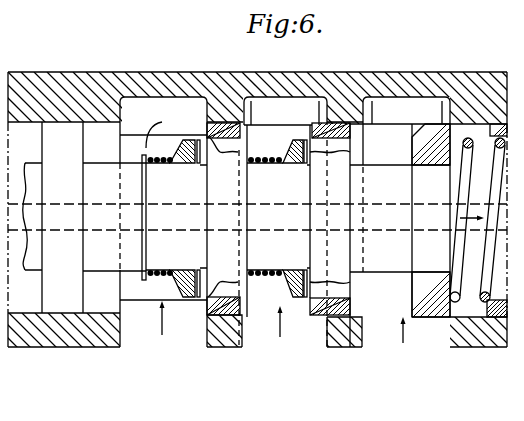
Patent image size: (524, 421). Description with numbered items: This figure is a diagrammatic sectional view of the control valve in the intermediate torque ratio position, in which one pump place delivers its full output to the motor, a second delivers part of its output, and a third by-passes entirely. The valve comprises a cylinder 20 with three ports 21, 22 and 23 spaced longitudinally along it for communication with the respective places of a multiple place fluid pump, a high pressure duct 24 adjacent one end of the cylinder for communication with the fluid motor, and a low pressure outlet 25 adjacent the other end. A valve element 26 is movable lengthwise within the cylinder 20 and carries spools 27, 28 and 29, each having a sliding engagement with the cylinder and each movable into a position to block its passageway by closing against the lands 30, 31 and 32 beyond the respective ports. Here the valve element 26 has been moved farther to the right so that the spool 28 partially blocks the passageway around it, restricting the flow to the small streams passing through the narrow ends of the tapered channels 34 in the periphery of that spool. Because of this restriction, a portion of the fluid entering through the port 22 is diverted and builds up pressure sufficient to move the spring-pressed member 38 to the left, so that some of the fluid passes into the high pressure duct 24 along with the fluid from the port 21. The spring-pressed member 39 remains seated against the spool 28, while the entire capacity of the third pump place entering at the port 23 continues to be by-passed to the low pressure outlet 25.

The cylinder 20 is at (100, 132).
The port 21 is at (207, 322).
The port 22 is at (330, 323).
The port 23 is at (450, 325).
The high pressure duct 24 is at (145, 301).
The low pressure outlet 25 is at (497, 300).
The valve element 26 is at (27, 164).
The spool 27 is at (199, 141).
The spool 28 is at (313, 123).
The spool 29 is at (418, 124).
The land 30 is at (228, 123).
The land 31 is at (374, 132).
The land 32 is at (464, 133).
The tapered channels 34 is at (356, 136).
The spring-pressed member 38 is at (190, 164).
The spring-pressed member 39 is at (299, 164).